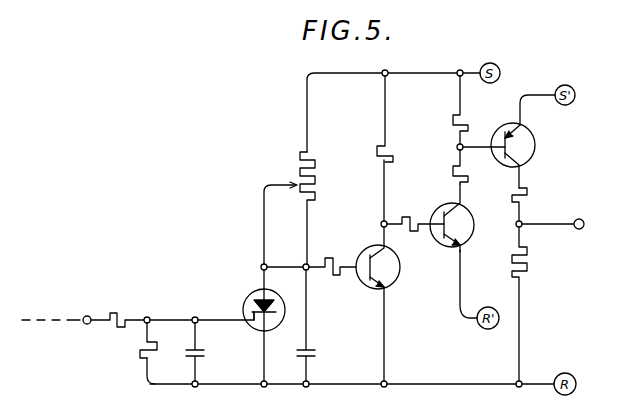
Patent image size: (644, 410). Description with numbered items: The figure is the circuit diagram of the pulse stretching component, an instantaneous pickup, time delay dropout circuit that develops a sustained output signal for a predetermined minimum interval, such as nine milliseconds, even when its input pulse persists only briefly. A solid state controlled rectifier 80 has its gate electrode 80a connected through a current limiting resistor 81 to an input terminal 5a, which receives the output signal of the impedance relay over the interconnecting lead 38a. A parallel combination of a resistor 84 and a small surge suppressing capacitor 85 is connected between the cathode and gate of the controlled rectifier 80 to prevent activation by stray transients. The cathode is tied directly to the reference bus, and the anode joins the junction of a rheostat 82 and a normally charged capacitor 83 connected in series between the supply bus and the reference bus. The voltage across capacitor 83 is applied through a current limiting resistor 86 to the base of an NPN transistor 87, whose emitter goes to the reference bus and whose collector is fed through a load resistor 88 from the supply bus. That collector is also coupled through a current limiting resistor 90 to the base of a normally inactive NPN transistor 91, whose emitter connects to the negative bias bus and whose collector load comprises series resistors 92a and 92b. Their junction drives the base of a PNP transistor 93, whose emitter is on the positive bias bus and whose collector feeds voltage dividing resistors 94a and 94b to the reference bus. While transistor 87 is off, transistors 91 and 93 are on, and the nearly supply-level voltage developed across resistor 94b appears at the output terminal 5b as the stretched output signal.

The interconnecting lead 38a is at (44, 316).
The input terminal 5a is at (88, 315).
The current limiting resistor 81 is at (120, 312).
The resistor 84 is at (140, 354).
The surge suppressing capacitor 85 is at (206, 353).
The solid state controlled rectifier 80 is at (277, 296).
The gate electrode 80a is at (250, 316).
The rheostat 82 is at (316, 157).
The capacitor 83 is at (316, 353).
The current limiting resistor 86 is at (328, 257).
The NPN transistor 87 is at (400, 266).
The load resistor 88 is at (392, 150).
The current limiting resistor 90 is at (409, 215).
The NPN transistor 91 is at (476, 222).
The resistor 92a is at (466, 170).
The resistor 92b is at (466, 119).
The PNP transistor 93 is at (536, 148).
The voltage dividing resistor 94a is at (528, 193).
The voltage dividing resistor 94b is at (528, 266).
The output terminal 5b is at (583, 229).